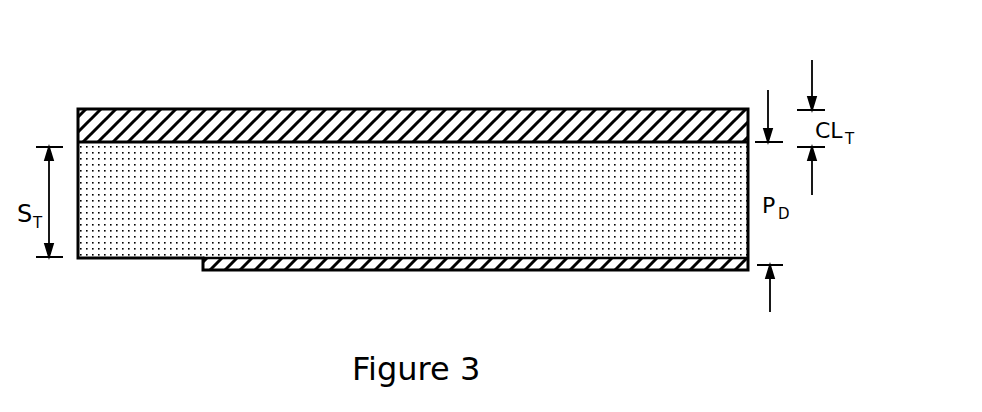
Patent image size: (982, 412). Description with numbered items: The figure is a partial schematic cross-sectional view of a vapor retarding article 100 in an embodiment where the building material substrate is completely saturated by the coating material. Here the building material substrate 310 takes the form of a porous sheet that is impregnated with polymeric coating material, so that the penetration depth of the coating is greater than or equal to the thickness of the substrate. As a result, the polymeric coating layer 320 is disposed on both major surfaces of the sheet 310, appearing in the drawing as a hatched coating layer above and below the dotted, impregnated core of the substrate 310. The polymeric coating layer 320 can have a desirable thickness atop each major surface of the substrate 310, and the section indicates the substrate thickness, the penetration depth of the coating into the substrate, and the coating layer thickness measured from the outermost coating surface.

The article 100 is at (87, 80).
The polymeric coating layer 320 is at (238, 110).
The building material substrate 310 is at (122, 253).